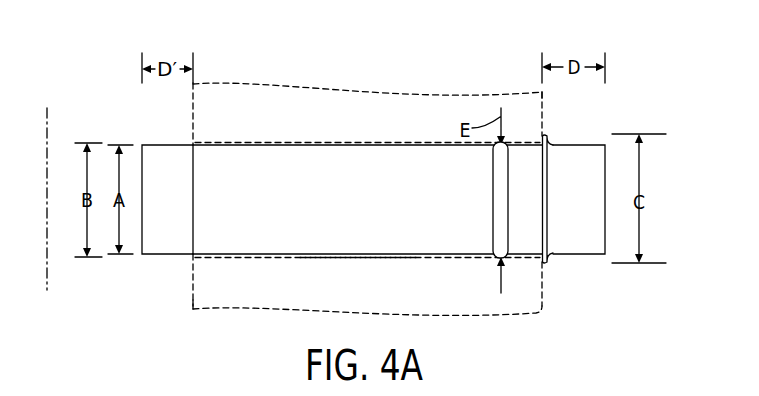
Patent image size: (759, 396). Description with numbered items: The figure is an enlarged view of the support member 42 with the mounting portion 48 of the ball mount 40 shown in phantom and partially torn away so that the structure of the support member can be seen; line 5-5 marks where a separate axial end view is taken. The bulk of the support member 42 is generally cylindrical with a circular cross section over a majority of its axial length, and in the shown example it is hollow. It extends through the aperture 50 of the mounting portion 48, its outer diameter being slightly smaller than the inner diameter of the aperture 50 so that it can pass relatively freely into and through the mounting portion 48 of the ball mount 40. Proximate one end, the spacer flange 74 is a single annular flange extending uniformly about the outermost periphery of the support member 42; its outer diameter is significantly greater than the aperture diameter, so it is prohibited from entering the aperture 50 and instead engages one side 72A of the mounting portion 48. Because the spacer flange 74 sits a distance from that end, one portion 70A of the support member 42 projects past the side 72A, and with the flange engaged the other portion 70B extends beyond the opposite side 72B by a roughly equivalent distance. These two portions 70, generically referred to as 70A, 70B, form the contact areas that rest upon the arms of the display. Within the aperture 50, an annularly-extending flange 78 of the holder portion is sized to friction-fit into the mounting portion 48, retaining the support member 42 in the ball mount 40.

The line 5- 5 is at (47, 110).
The ball mount 40 is at (367, 220).
The support member 42 is at (352, 163).
The mounting portion 48 is at (243, 307).
The aperture 50 is at (365, 250).
The portions 70 is at (379, 225).
The portion 70A is at (582, 243).
The portion 70B is at (162, 243).
The side 72A is at (545, 117).
The side 72B is at (187, 308).
The spacer flange 74 is at (548, 262).
The annularly-extending flange 78 is at (505, 195).